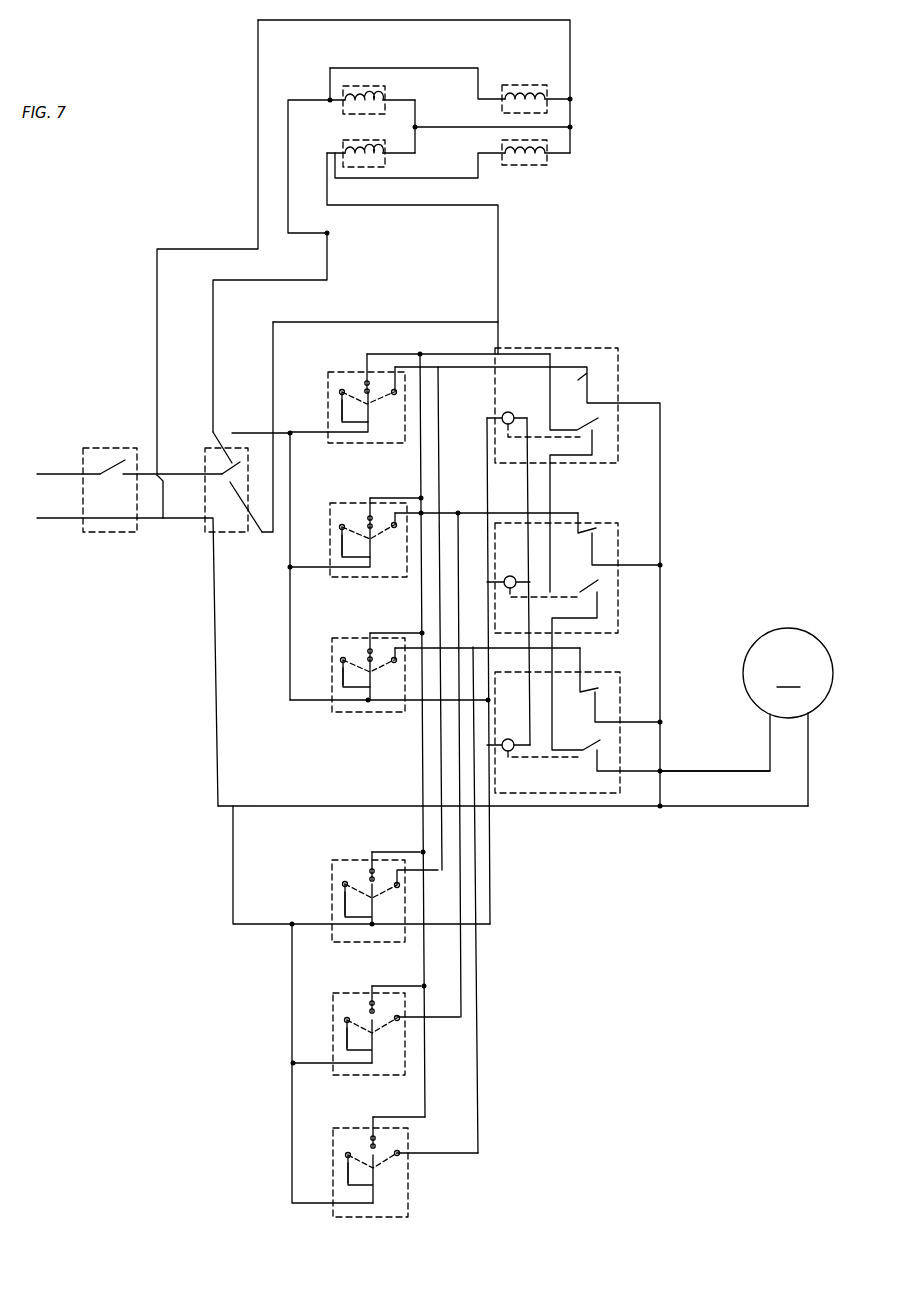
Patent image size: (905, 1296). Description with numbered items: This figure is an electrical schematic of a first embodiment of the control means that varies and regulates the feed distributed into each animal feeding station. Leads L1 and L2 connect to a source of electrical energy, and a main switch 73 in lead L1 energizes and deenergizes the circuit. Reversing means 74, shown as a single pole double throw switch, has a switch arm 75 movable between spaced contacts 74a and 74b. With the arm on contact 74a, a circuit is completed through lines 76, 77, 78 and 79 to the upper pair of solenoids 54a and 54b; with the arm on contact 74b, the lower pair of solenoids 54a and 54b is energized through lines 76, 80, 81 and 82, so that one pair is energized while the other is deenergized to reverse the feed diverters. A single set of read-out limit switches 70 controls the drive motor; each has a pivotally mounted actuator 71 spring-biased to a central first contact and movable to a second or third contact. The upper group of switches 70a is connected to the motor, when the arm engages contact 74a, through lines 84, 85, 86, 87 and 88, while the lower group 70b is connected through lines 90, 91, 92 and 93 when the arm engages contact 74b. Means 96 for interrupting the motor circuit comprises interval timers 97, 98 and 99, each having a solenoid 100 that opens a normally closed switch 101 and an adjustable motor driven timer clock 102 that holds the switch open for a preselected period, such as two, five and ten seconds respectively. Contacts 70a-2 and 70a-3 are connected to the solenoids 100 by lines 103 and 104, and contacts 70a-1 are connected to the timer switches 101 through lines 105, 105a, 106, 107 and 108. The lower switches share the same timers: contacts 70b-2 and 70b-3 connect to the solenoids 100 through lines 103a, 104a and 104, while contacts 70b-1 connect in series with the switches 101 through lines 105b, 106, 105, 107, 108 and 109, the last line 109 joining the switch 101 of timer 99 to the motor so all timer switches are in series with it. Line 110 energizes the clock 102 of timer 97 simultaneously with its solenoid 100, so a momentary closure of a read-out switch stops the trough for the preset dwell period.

The line 79 is at (424, 68).
The solenoid 54a is at (330, 98).
The solenoid 54b is at (550, 96).
The line 80 is at (482, 127).
The line 81 is at (470, 178).
The line 78 is at (288, 170).
The line 77 is at (270, 282).
The line 76 is at (157, 296).
The line 82 is at (420, 322).
The line 84 is at (262, 433).
The reversing means 74 is at (198, 540).
The contact 74a is at (228, 463).
The switch arm 75 is at (222, 474).
The contact 74b is at (232, 482).
The main switch 73 is at (108, 460).
The lead L1 is at (126, 464).
The lead L2 is at (60, 518).
The line 86 is at (290, 472).
The line 104 is at (467, 354).
The line 110 is at (487, 490).
The line 85 is at (292, 436).
The limit switch 70 is at (293, 392).
The upper group of read-out switches 70a is at (330, 392).
The first contact 70a-1 is at (364, 380).
The actuator 71 is at (358, 394).
The second contact 70a-2 is at (340, 392).
The line 103 is at (340, 412).
The third contact 70a-3 is at (393, 400).
The line 105 is at (574, 384).
The line 105a is at (412, 495).
The line 87 is at (292, 570).
The line 88 is at (362, 702).
The line 106 is at (420, 756).
The line 104a is at (460, 784).
The interval timer 97 is at (532, 348).
The line 107 is at (550, 479).
The timer clock 102 is at (504, 412).
The solenoid 100 is at (600, 373).
The switch 101 is at (600, 432).
The line 108 is at (584, 610).
The interval timer 98 is at (604, 633).
The interval timer 99 is at (600, 800).
The means for interrupting the circuit 96 is at (549, 818).
The line 109 is at (722, 764).
The line 91 is at (378, 926).
The line 92 is at (280, 966).
The line 93 is at (290, 1072).
The line 105b is at (392, 850).
The first contact 70b-1 is at (368, 870).
The lower group of read-out switches 70b is at (332, 874).
The second contact 70b-2 is at (343, 884).
The third contact 70b-3 is at (396, 880).
The line 103a is at (344, 906).
The line 90 is at (215, 706).